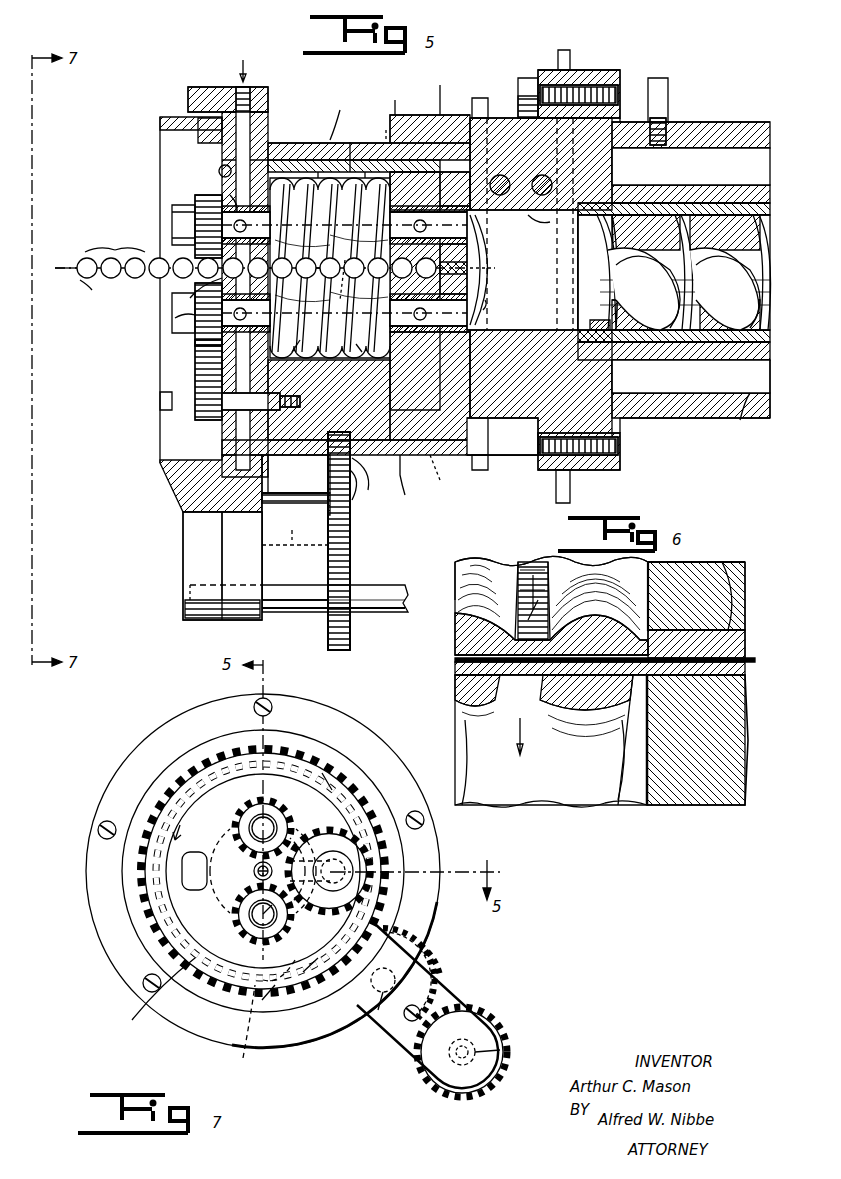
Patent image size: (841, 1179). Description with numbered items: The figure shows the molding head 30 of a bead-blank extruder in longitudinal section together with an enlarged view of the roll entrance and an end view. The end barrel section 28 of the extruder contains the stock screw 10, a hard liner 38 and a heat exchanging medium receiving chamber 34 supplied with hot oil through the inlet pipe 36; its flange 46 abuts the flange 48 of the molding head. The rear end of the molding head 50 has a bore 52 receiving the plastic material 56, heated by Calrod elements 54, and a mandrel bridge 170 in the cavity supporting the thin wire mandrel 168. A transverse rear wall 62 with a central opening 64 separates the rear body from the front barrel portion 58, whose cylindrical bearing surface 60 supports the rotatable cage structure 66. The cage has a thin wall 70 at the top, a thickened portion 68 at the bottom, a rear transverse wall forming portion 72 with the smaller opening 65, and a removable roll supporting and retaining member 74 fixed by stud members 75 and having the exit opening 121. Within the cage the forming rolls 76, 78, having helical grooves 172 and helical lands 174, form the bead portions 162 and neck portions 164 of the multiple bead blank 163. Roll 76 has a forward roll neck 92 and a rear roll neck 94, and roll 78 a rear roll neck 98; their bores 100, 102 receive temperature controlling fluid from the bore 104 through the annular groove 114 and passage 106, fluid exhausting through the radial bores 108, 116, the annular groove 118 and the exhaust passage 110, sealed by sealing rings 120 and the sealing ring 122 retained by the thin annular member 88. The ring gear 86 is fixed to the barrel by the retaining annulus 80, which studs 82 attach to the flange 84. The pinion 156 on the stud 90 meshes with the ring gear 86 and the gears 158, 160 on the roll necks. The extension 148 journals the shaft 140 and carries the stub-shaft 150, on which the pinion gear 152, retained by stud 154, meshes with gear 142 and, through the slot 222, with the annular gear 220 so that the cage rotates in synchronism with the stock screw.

In FIG. 5, the stock screw 10 is at (752, 280).
In FIG. 5, the end barrel section 28 is at (722, 115).
In FIG. 5, the molding head 30 is at (462, 100).
In FIG. 7, the molding head 30 is at (378, 718).
In FIG. 5, the heat exchanging medium receiving chamber 34 is at (725, 150).
In FIG. 5, the inlet pipe 36 is at (668, 92).
In FIG. 5, the hard liner 38 is at (749, 404).
In FIG. 5, the flange 46 is at (605, 70).
In FIG. 5, the flange 48 is at (548, 70).
In FIG. 5, the rear end of the molding head 50 is at (499, 436).
In FIG. 5, the bore 52 is at (542, 223).
In FIG. 5, the Calrod elements 54 is at (500, 175).
In FIG. 5, the plastic material 56 is at (650, 203).
In FIG. 6, the plastic material 56 is at (745, 630).
In FIG. 5, the barrel portion 58 is at (373, 475).
In FIG. 5, the cylindrical bearing surface 60 is at (312, 143).
In FIG. 5, the transverse rear wall 62 is at (488, 280).
In FIG. 5, the central opening 64 is at (482, 238).
In FIG. 5, the opening 65 is at (392, 302).
In FIG. 6, the opening 65 is at (722, 568).
In FIG. 5, the cage structure 66 is at (350, 140).
In FIG. 5, the thickened portion 68 is at (364, 470).
In FIG. 5, the thin wall 70 is at (362, 170).
In FIG. 5, the rear transverse wall forming portion 72 is at (395, 172).
In FIG. 6, the rear transverse wall forming portion 72 is at (730, 562).
In FIG. 5, the removable roll supporting and retaining member 74 is at (369, 137).
In FIG. 7, the stud members 75 is at (318, 844).
In FIG. 5, the forming roll 76 is at (332, 125).
In FIG. 6, the forming roll 76 is at (482, 560).
In FIG. 7, the forming roll 76 is at (282, 800).
In FIG. 5, the forming roll 78 is at (283, 748).
In FIG. 6, the forming roll 78 is at (570, 803).
In FIG. 7, the forming roll 78 is at (262, 960).
In FIG. 5, the retaining annulus 80 is at (190, 108).
In FIG. 7, the retaining annulus 80 is at (392, 768).
In FIG. 5, the studs 82 is at (190, 88).
In FIG. 7, the studs 82 is at (272, 700).
In FIG. 5, the flange 84 is at (233, 556).
In FIG. 5, the ring gear 86 is at (198, 133).
In FIG. 7, the ring gear 86 is at (155, 998).
In FIG. 5, the thin annular member 88 is at (236, 110).
In FIG. 5, the stud 90 is at (299, 474).
In FIG. 7, the stud 90 is at (360, 880).
In FIG. 5, the forward roll neck 92 is at (225, 196).
In FIG. 5, the rear roll neck 94 is at (392, 210).
In FIG. 5, the rear roll neck 98 is at (364, 355).
In FIG. 5, the bore 100 is at (330, 263).
In FIG. 5, the bore 102 is at (355, 281).
In FIG. 5, the bore 104 is at (248, 90).
In FIG. 5, the passage 106 is at (222, 165).
In FIG. 5, the radial bore 108 is at (399, 98).
In FIG. 5, the exhaust passage 110 is at (444, 95).
In FIG. 5, the annular groove 114 is at (270, 142).
In FIG. 5, the radial bore 116 is at (445, 479).
In FIG. 5, the annular groove 118 is at (410, 484).
In FIG. 5, the sealing rings 120 is at (296, 353).
In FIG. 5, the exit opening 121 is at (190, 298).
In FIG. 5, the sealing ring 122 is at (222, 158).
In FIG. 5, the shaft 140 is at (408, 595).
In FIG. 7, the shaft 140 is at (462, 1052).
In FIG. 5, the gear 142 is at (352, 585).
In FIG. 7, the gear 142 is at (505, 1020).
In FIG. 5, the extension 148 is at (183, 575).
In FIG. 7, the extension 148 is at (427, 1006).
In FIG. 5, the stub-shaft 150 is at (330, 1065).
In FIG. 5, the pinion gear 152 is at (352, 535).
In FIG. 7, the pinion gear 152 is at (445, 955).
In FIG. 5, the stud 154 is at (310, 540).
In FIG. 5, the pinion 156 is at (195, 360).
In FIG. 7, the pinion 156 is at (385, 850).
In FIG. 5, the gear 158 is at (190, 228).
In FIG. 7, the gear 158 is at (255, 806).
In FIG. 5, the gear 160 is at (195, 320).
In FIG. 7, the gear 160 is at (250, 985).
In FIG. 5, the bead portions 162 is at (80, 293).
In FIG. 6, the bead portions 162 is at (660, 700).
In FIG. 5, the multiple bead blank 163 is at (115, 242).
In FIG. 5, the neck portions 164 is at (172, 317).
In FIG. 6, the neck portions 164 is at (500, 705).
In FIG. 5, the mandrel 168 is at (62, 270).
In FIG. 6, the mandrel 168 is at (748, 658).
In FIG. 5, the mandrel bridge 170 is at (490, 298).
In FIG. 6, the helical grooves 172 is at (460, 638).
In FIG. 6, the helical lands 174 is at (536, 562).
In FIG. 5, the annular gear 220 is at (358, 504).
In FIG. 7, the annular gear 220 is at (261, 1018).
In FIG. 5, the slot 222 is at (301, 481).
In FIG. 7, the slot 222 is at (372, 925).